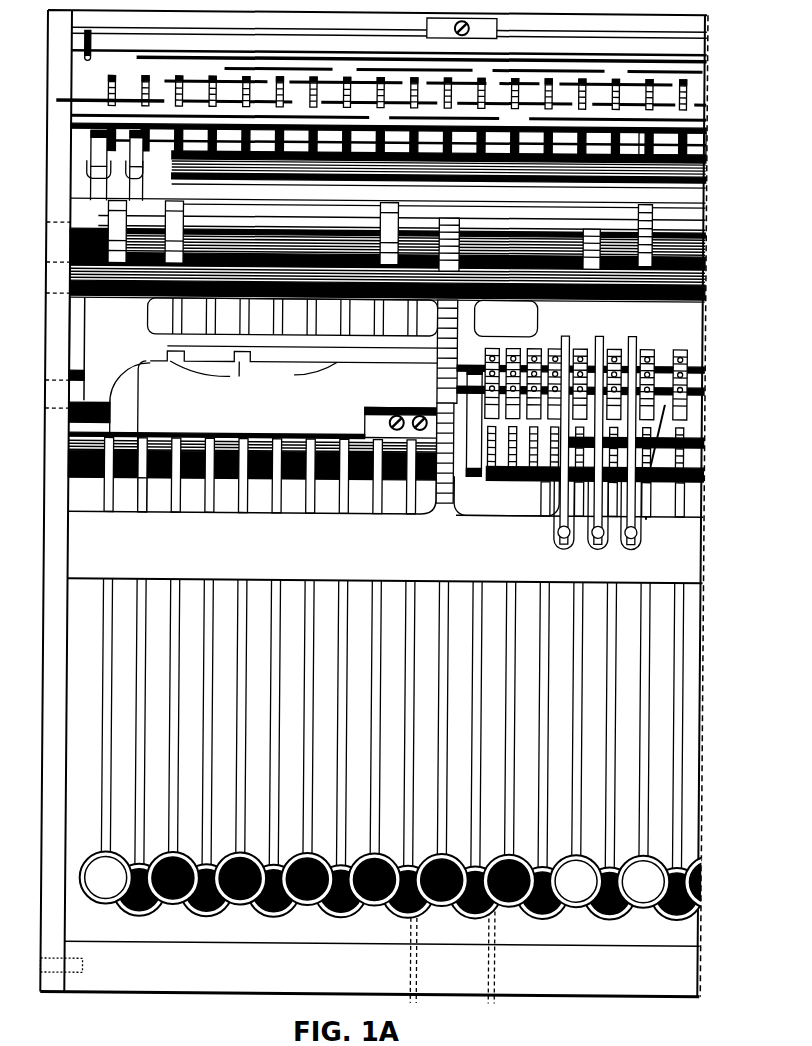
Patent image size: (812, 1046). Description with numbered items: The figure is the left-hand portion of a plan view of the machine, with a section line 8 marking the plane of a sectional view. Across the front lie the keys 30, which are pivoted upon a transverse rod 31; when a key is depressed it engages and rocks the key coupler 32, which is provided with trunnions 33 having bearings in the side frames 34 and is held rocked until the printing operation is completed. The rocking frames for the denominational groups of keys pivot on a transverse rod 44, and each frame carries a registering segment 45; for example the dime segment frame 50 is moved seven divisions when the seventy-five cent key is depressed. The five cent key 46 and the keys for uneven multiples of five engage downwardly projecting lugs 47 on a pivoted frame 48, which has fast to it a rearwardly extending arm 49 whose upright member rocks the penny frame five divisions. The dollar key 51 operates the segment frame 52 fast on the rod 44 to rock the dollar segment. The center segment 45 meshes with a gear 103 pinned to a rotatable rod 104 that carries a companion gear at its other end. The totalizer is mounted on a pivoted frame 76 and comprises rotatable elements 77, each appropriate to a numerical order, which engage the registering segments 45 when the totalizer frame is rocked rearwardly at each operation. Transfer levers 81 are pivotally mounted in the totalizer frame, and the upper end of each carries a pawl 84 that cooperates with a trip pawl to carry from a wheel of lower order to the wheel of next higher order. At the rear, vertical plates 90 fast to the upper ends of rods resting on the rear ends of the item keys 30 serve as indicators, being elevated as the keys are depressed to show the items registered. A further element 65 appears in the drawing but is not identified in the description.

The section line 8- 8 is at (702, 8).
The vertical plate 90 is at (57, 100).
The segment frame 52 is at (95, 182).
The transverse rod 44 is at (72, 218).
The dime segment frame 50 is at (283, 196).
The rearwardly extending arm 49 is at (668, 130).
The registering segment 45 is at (650, 212).
The gear 103 is at (611, 246).
The key coupler 32 is at (95, 322).
The rotatable rod 104 is at (387, 309).
The trunnions 33 is at (60, 380).
The downwardly projecting lugs 47 is at (293, 372).
The rotatable elements 77 is at (513, 338).
The side frames 34 is at (55, 440).
The transverse rod 31 is at (80, 478).
The pivoted frame 48 is at (157, 505).
The bar 65 is at (632, 448).
The pivoted frame 76 is at (489, 480).
The pawl 84 is at (560, 510).
The transfer levers 81 is at (632, 545).
The dollar key 51 is at (108, 903).
The keys 30 is at (580, 903).
The five cent key 46 is at (650, 905).